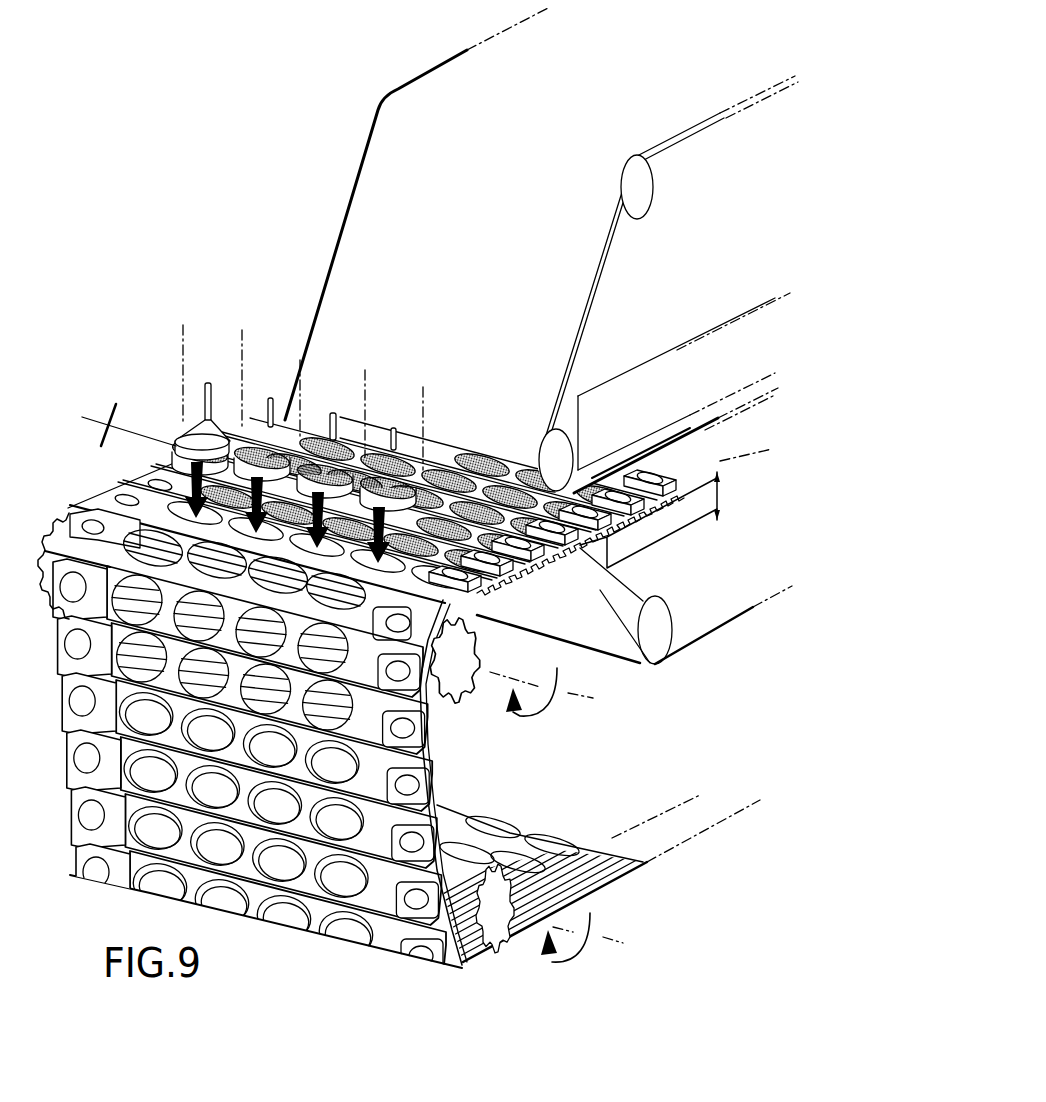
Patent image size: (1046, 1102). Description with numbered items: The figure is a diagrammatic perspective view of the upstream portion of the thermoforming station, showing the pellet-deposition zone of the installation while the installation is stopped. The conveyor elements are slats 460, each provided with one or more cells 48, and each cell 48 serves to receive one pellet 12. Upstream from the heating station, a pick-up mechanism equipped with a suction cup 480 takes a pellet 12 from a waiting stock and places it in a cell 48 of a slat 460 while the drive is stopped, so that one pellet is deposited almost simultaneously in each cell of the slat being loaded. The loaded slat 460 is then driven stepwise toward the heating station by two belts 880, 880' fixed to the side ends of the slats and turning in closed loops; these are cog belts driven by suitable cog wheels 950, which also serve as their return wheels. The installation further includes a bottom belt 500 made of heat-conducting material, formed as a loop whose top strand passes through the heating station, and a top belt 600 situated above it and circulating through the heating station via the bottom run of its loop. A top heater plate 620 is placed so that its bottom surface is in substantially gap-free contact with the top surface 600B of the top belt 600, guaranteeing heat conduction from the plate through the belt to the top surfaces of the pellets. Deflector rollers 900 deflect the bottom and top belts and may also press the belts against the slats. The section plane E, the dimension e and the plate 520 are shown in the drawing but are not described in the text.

The pellet 12 is at (183, 453).
The cell 48 is at (143, 531).
The conveyor element (slat) 460 is at (73, 823).
The suction cup 480 is at (193, 432).
The bottom belt 500 is at (634, 651).
The plate 520 is at (653, 540).
The top belt 600 is at (417, 210).
The top surface of the top conveyor belt 600B is at (677, 440).
The top heater plate 620 is at (652, 380).
The belt 880 is at (39, 559).
The belt 880' is at (456, 782).
The deflector roller 900 is at (552, 470).
The cog wheel 950 is at (480, 654).
The section plane E is at (95, 419).
The thickness e is at (722, 496).